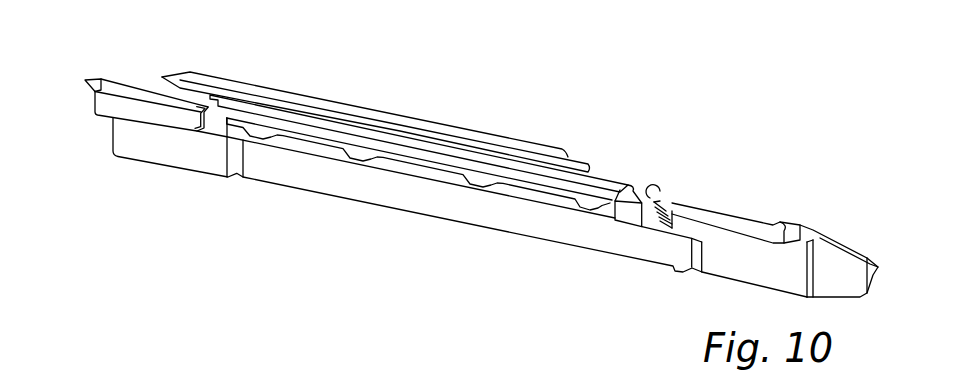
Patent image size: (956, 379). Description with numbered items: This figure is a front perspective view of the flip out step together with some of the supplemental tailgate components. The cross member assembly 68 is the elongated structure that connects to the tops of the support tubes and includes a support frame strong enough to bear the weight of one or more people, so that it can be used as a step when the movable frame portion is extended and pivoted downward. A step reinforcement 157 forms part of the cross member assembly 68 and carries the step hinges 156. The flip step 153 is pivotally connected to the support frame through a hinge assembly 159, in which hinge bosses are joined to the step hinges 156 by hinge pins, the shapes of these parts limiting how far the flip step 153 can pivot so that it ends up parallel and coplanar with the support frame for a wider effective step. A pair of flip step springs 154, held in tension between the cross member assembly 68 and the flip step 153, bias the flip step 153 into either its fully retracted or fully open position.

The cross member assembly 68 is at (736, 185).
The flip step 153 is at (357, 106).
The flip step springs 154 is at (662, 192).
The step hinges 156 is at (405, 170).
The step reinforcement 157 is at (353, 203).
The hinge assembly 159 is at (309, 147).